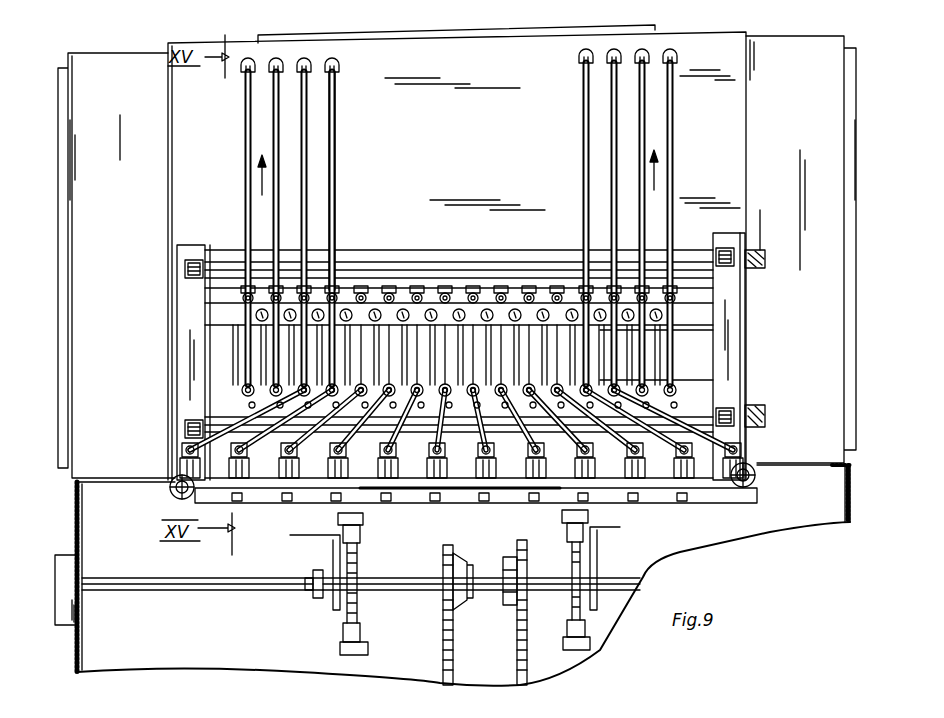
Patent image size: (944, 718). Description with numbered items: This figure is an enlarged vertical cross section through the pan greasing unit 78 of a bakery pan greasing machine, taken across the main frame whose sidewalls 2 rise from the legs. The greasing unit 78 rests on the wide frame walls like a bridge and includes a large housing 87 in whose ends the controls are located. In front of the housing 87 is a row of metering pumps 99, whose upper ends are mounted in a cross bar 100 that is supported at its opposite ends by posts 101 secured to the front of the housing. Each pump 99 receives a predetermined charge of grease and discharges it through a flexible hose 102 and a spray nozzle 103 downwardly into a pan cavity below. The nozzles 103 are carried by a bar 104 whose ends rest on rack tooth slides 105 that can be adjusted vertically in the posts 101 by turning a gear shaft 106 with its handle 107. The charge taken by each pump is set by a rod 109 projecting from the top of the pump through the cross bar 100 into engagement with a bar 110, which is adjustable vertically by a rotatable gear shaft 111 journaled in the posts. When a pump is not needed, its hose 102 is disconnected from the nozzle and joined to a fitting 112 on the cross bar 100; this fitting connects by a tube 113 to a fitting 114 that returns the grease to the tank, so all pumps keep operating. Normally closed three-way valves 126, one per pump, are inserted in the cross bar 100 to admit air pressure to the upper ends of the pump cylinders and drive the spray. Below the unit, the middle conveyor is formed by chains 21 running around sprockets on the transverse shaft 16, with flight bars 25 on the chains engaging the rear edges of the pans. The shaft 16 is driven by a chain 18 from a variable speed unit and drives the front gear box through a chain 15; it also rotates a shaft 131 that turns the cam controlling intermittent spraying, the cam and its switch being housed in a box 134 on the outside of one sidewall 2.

The sidewalls 2 is at (76, 512).
The chain 15 is at (520, 649).
The transverse shaft 16 is at (383, 583).
The chain 18 is at (445, 649).
The chains 21 is at (350, 556).
The flight bars 25 is at (562, 515).
The pan greasing unit 78 is at (58, 336).
The housing 87 is at (466, 149).
The metering pumps 99 is at (680, 345).
The cross bar 100 is at (222, 302).
The posts 101 is at (188, 355).
The flexible hose 102 is at (675, 302).
The spray nozzle 103 is at (438, 490).
The bar 104 is at (695, 480).
The rack tooth slides 105 is at (200, 470).
The gear shaft 106 is at (220, 430).
The handle 107 is at (760, 388).
The rod 109 is at (428, 275).
The bar 110 is at (396, 262).
The gear shaft 111 is at (506, 270).
The fitting 112 is at (248, 286).
The tube 113 is at (337, 156).
The fitting 114 is at (338, 60).
The three-way valves 126 is at (256, 317).
The shaft 131 is at (150, 590).
The box 134 is at (68, 626).